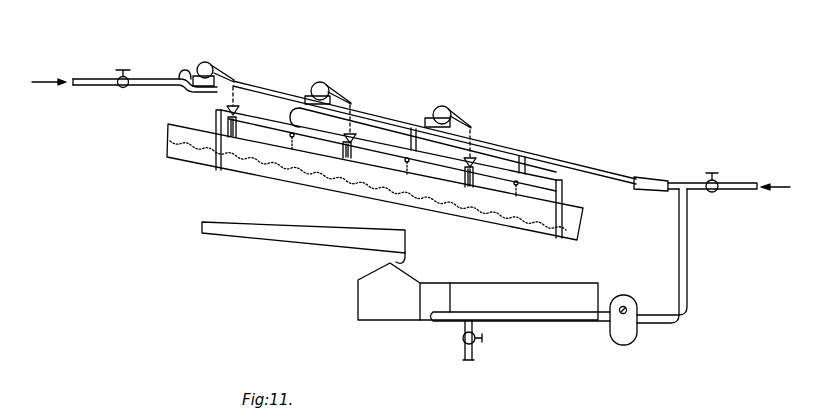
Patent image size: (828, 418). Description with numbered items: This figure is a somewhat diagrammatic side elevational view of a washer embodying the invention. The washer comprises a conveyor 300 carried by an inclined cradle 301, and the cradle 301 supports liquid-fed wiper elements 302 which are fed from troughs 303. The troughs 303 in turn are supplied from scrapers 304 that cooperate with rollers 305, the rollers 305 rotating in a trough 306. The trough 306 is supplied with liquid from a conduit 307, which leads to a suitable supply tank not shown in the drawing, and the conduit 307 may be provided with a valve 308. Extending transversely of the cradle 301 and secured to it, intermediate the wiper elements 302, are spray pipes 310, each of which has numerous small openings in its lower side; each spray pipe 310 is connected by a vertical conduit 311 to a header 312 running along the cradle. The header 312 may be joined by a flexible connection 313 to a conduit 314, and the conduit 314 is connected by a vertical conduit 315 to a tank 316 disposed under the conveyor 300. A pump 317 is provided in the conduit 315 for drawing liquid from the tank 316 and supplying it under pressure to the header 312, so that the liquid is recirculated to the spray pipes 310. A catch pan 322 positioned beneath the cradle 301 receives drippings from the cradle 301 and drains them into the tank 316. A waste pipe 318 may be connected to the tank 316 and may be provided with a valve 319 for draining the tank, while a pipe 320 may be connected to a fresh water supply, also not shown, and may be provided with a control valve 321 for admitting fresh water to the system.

The conveyor 300 is at (289, 170).
The cradle 301 is at (180, 160).
The wiper elements 302 is at (216, 112).
The troughs 303 is at (238, 113).
The scrapers 304 is at (231, 77).
The rollers 305 is at (214, 53).
The trough 306 is at (185, 70).
The conduit 307 is at (161, 79).
The valve 308 is at (122, 89).
The spray pipes 310 is at (294, 137).
The vertical conduit 311 is at (296, 124).
The header 312 is at (500, 150).
The flexible connection 313 is at (654, 177).
The conduit 314 is at (681, 181).
The vertical conduit 315 is at (689, 250).
The tank 316 is at (530, 272).
The pump 317 is at (635, 305).
The waste pipe 318 is at (464, 329).
The valve 319 is at (477, 344).
The pipe 320 is at (742, 183).
The control valve 321 is at (712, 194).
The catch pan 322 is at (243, 233).